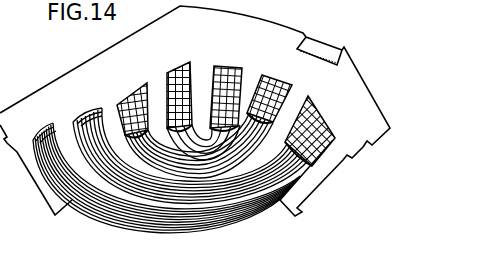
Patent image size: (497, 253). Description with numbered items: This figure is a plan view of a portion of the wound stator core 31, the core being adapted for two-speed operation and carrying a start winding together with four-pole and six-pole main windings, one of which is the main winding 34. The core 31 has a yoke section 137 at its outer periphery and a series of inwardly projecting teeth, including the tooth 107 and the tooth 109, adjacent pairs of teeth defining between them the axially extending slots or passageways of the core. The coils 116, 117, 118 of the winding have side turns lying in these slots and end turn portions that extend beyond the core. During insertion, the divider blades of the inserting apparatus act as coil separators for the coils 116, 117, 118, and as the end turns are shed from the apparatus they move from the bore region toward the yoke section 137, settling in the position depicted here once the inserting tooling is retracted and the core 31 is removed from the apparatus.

The yoke section 137 is at (100, 78).
The stator core 31 is at (358, 72).
The main winding 34 is at (322, 124).
The coil 116 is at (157, 110).
The tooth 107 is at (197, 118).
The tooth 109 is at (247, 110).
The coil 117 is at (190, 155).
The coil 118 is at (166, 178).